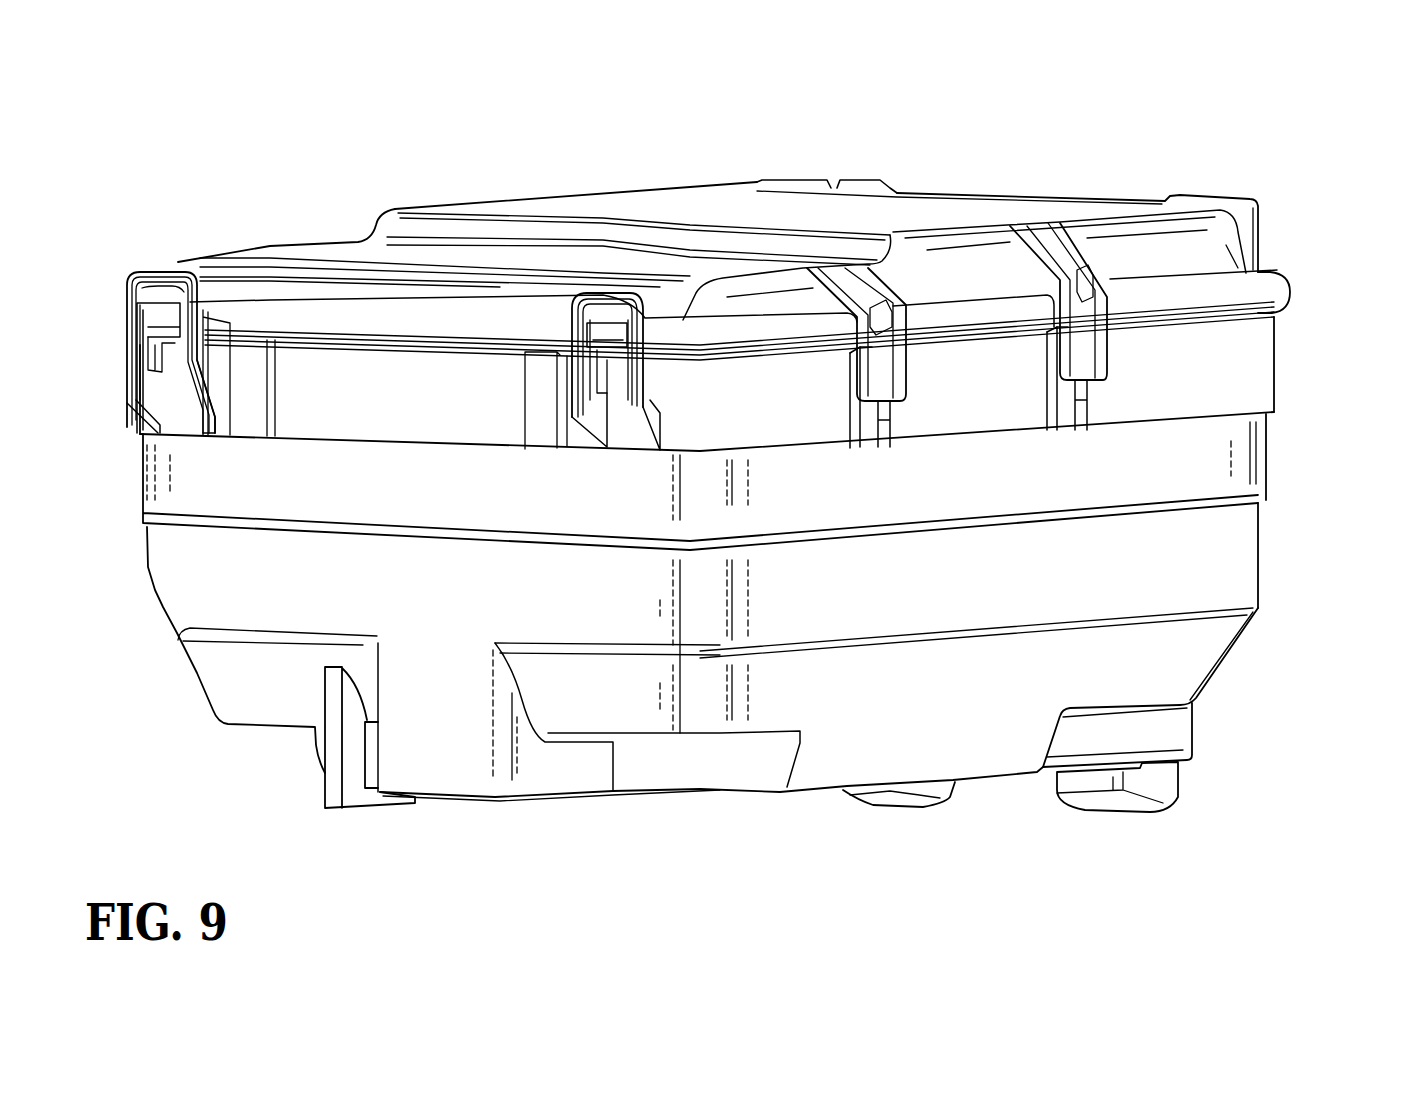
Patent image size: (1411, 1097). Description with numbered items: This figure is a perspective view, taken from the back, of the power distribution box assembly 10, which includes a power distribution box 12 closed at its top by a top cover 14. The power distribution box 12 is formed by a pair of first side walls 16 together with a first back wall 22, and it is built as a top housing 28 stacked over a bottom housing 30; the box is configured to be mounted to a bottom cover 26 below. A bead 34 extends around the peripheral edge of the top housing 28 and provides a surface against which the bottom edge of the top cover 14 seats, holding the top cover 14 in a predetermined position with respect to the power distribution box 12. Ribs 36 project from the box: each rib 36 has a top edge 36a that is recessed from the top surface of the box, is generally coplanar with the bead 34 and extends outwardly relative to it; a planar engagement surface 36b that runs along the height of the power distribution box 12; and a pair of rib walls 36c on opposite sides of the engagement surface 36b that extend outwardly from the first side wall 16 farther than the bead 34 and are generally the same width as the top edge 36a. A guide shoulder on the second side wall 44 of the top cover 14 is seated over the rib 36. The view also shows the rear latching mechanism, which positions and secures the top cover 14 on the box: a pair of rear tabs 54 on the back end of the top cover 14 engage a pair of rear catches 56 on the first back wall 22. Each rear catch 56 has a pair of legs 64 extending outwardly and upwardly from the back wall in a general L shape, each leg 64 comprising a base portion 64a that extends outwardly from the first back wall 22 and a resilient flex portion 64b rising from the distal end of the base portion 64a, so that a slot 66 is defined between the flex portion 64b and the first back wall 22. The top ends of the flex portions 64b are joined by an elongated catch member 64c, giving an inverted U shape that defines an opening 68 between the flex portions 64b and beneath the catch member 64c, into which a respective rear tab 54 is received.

The power distribution box assembly 10 is at (1150, 117).
The power distribution box 12 is at (1363, 345).
The top cover 14 is at (1291, 238).
The first side wall 16 is at (1201, 367).
The first back wall 22 is at (425, 400).
The bottom cover 26 is at (1284, 530).
The top housing 28 is at (1290, 376).
The bottom housing 30 is at (1286, 452).
The bead 34 is at (1218, 330).
The rib 36 is at (868, 451).
The top edge 36a is at (847, 358).
The engagement surface 36b is at (890, 420).
The rib walls 36c is at (847, 419).
The second side wall 44 is at (1281, 289).
The rear tab 54 is at (152, 303).
The rear catch 56 is at (121, 382).
The legs 64 is at (126, 351).
The base portion 64a is at (150, 425).
The flex portion 64b is at (128, 326).
The catch member 64c is at (178, 284).
The slot 66 is at (208, 352).
The opening 68 is at (169, 356).